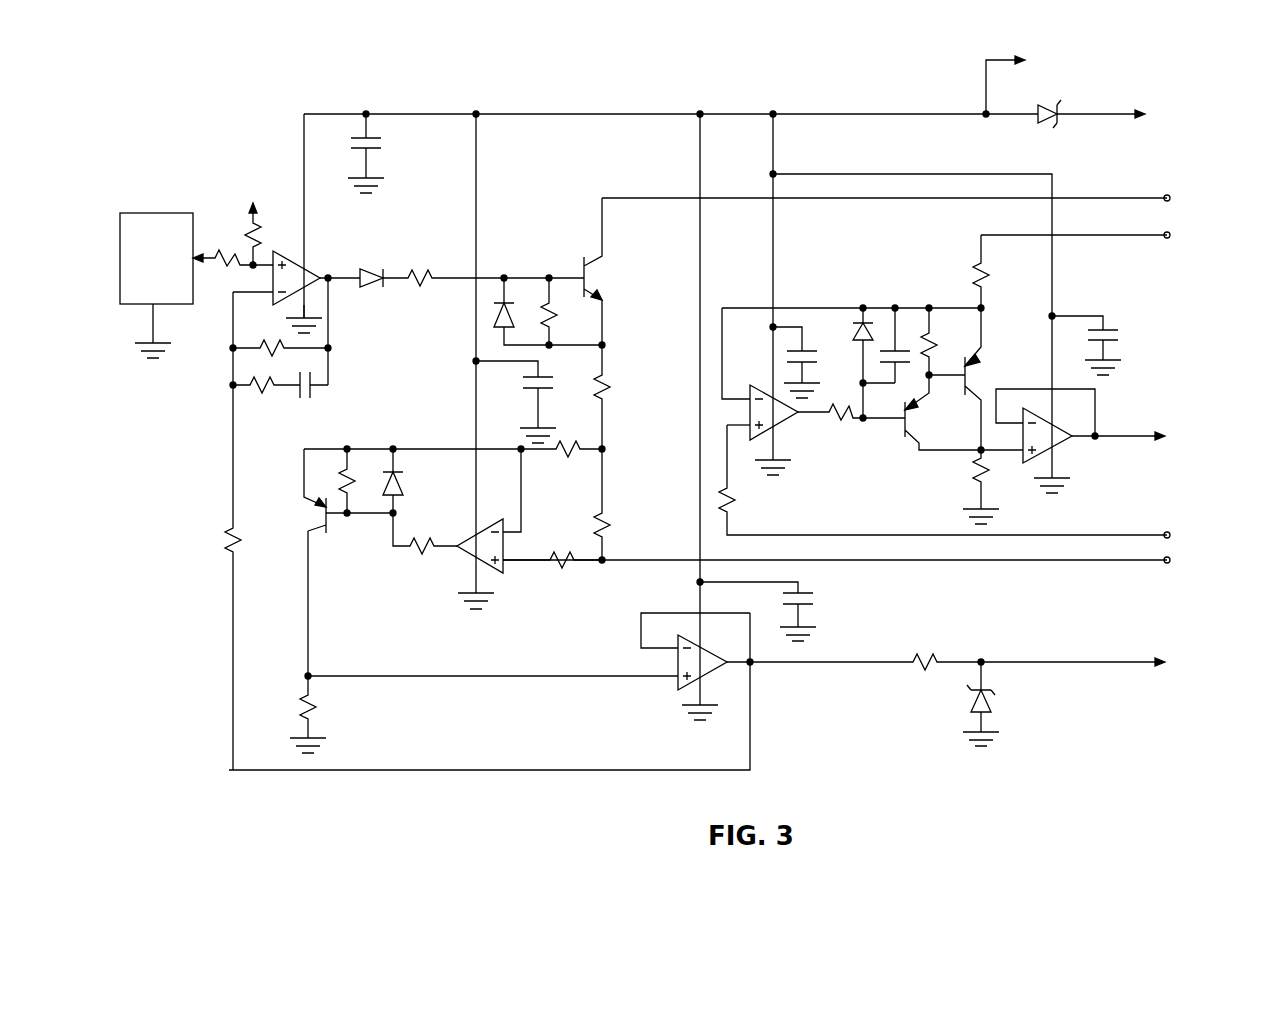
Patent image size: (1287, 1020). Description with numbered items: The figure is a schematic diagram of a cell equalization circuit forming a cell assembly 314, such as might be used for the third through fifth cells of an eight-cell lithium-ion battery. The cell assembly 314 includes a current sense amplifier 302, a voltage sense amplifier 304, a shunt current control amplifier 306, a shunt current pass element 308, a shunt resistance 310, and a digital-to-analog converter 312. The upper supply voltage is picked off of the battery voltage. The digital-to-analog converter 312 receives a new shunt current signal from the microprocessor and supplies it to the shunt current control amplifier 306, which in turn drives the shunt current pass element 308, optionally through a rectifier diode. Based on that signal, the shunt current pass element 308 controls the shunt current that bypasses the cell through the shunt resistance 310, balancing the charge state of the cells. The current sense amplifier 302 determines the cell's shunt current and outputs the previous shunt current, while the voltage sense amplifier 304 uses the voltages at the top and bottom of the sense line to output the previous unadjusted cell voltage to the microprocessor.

The current sense amplifier 302 is at (470, 782).
The voltage sense amplifier 304 is at (1035, 503).
The shunt current control amplifier 306 is at (325, 258).
The shunt current pass element 308 is at (617, 272).
The shunt resistance 310 is at (617, 372).
The digital-to-analog converter (D/A) 312 is at (155, 213).
The cell assembly 314 is at (202, 90).